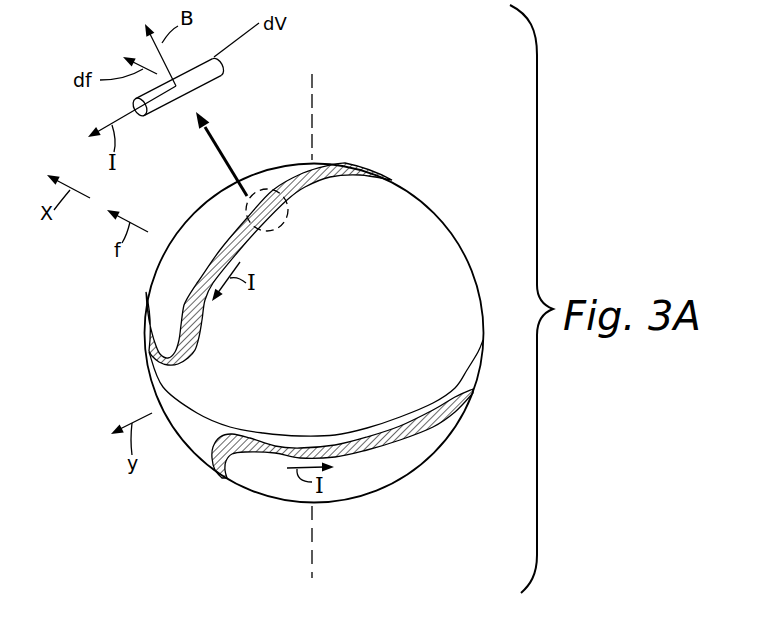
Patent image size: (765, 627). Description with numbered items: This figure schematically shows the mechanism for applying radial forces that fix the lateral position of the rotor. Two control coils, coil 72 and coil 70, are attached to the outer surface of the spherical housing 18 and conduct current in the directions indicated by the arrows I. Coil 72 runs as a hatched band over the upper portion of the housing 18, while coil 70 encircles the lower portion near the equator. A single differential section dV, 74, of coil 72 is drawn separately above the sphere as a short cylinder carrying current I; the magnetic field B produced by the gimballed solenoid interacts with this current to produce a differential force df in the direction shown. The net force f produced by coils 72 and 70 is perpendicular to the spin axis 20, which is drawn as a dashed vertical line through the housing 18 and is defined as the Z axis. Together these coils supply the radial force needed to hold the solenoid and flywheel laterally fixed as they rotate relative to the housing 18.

The housing 18 is at (458, 263).
The spin axis 20 is at (314, 541).
The coil 70 is at (472, 391).
The coil 72 is at (357, 164).
The differential section dV of coil 74 is at (219, 77).